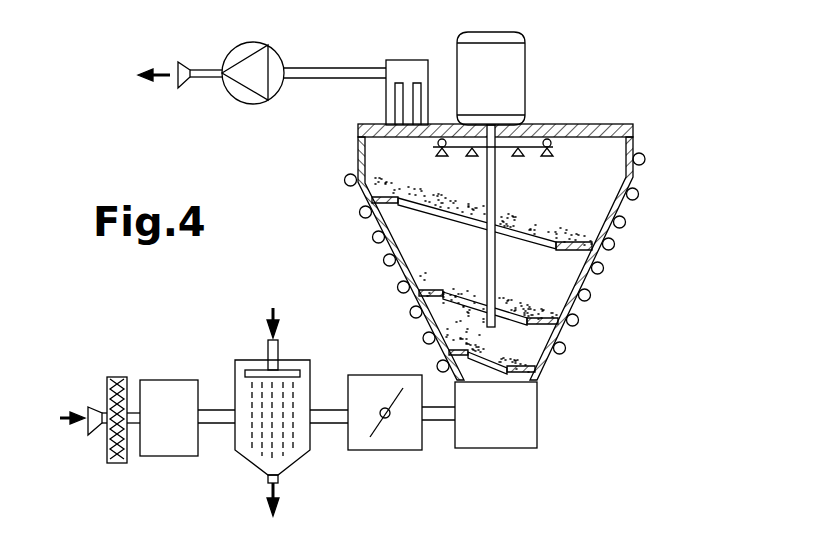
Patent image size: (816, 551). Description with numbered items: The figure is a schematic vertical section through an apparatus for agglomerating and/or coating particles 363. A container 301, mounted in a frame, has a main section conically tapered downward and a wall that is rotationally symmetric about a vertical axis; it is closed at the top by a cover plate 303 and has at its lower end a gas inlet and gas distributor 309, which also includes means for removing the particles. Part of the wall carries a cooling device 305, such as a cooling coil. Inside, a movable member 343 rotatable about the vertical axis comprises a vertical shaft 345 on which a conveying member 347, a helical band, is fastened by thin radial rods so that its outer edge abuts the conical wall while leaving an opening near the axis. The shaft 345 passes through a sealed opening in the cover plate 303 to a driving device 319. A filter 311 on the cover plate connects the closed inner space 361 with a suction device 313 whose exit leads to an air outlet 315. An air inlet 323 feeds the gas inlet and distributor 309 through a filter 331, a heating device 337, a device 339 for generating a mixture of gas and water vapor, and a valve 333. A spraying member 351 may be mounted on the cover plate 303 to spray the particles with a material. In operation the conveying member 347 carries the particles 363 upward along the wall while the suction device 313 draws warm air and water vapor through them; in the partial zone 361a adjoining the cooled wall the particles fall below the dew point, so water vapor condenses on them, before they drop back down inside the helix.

The container 301 is at (596, 282).
The cover plate 303 is at (614, 124).
The cooling device 305 is at (640, 195).
The gas inlet and gas distributor 309 is at (537, 405).
The filter 311 is at (402, 60).
The suction device 313 is at (246, 103).
The air outlet 315 is at (178, 90).
The driving device 319 is at (527, 64).
The air inlet 323 is at (92, 406).
The filter 331 is at (110, 377).
The valve 333 is at (382, 375).
The heating device 337 is at (160, 380).
The device for generating the mixture of gas and water vapor 339 is at (256, 360).
The movable member 343 is at (542, 337).
The vertical shaft 345 is at (494, 168).
The conveying member 347 is at (405, 210).
The spraying member 351 is at (360, 150).
The space 361 is at (385, 163).
The partial zone 361a is at (418, 264).
The particles 363 is at (380, 318).